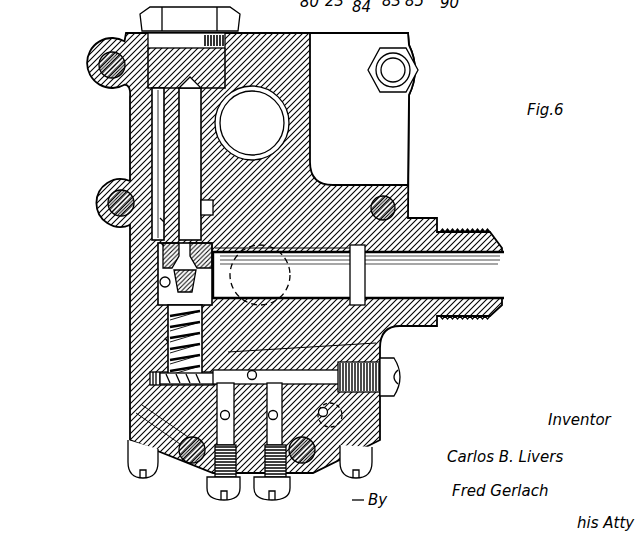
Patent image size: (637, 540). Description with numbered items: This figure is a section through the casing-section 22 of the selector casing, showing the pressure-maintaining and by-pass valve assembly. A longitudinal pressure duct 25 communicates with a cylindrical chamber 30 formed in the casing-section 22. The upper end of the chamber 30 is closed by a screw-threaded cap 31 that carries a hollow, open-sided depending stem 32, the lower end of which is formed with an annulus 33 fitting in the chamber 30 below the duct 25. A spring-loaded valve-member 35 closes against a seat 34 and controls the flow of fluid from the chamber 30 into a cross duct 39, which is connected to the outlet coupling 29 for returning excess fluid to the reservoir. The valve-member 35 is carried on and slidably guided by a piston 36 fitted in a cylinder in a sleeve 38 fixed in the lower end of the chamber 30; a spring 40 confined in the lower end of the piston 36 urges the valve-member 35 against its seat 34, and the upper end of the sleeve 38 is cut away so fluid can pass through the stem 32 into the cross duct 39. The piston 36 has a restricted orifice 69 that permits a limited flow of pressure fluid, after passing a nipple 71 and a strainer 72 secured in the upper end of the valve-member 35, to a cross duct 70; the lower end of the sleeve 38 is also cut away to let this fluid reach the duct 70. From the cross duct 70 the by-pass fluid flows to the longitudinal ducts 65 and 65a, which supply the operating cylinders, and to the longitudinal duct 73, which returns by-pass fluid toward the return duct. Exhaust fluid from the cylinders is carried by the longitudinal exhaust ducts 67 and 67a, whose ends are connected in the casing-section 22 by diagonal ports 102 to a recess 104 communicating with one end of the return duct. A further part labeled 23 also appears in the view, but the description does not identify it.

The casing-section 22 is at (304, 170).
The bolt holes 23 is at (96, 70).
The longitudinal pressure duct 25 is at (252, 123).
The outlet coupling 29 is at (470, 235).
The cylindrical chamber 30 is at (150, 160).
The screw-threaded cap 31 is at (228, 60).
The stem 32 is at (160, 218).
The annulus 33 is at (160, 242).
The seat 34 is at (163, 262).
The spring-loaded valve-member 35 is at (172, 282).
The piston 36 is at (166, 308).
The sleeve 38 is at (165, 340).
The cross duct 39 is at (358, 275).
The spring 40 is at (163, 385).
The longitudinal duct 65 is at (188, 476).
The longitudinal duct 65a is at (300, 468).
The longitudinal exhaust duct 67 is at (130, 428).
The longitudinal exhaust duct 67a is at (350, 417).
The restricted orifice 69 is at (203, 292).
The cross duct 70 is at (390, 364).
The nipple 71 is at (190, 158).
The strainer 72 is at (216, 238).
The longitudinal duct 73 is at (378, 345).
The diagonal ports 102 is at (168, 452).
The recess 104 is at (282, 235).